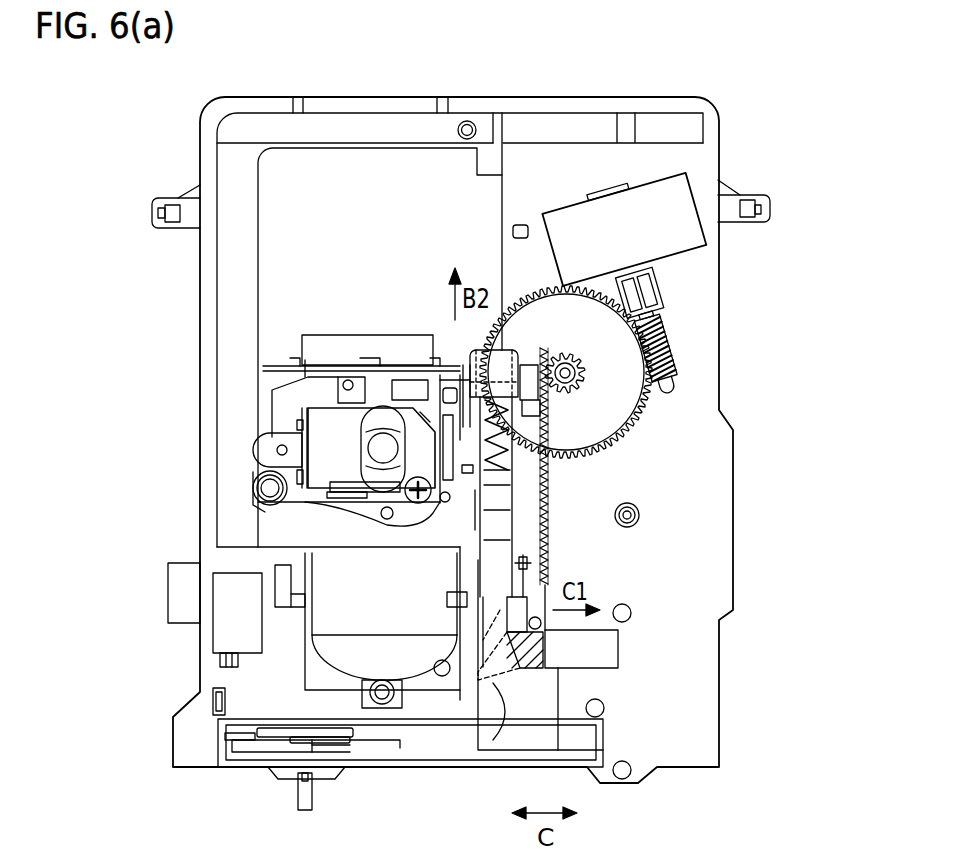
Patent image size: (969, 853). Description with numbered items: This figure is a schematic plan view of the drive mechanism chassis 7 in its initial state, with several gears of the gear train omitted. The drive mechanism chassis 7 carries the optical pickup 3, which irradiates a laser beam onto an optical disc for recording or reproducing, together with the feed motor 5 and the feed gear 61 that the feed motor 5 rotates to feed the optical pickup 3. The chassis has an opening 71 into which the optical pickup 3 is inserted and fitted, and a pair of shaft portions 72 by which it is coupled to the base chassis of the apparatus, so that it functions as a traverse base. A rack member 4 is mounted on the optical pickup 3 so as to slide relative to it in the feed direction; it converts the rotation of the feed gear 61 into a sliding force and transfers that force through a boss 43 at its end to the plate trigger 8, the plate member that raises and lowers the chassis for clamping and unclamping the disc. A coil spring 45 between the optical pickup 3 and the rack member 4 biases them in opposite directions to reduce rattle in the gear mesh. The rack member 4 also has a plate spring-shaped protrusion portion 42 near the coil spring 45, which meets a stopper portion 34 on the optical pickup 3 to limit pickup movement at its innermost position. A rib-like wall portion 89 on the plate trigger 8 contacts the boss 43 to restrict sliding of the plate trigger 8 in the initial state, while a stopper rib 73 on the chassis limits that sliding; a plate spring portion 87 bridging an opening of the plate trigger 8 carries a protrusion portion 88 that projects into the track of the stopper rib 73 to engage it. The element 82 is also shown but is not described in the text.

The drive mechanism chassis 7 is at (701, 97).
The opening 71 is at (375, 177).
The shaft portions 72 is at (187, 224).
The feed motor 5 is at (568, 218).
The optical pickup 3 is at (385, 375).
The protrusion portion 42 is at (470, 383).
The rack member 4 is at (530, 490).
The coil spring 45 is at (508, 446).
The feed gear 61 is at (626, 412).
The stopper portion 34 is at (475, 507).
The rib-like wall portion 89 is at (494, 632).
The boss 43 is at (540, 622).
The plate trigger 8 is at (378, 750).
The plate spring portion 87 is at (298, 733).
The protrusion portion 88 is at (250, 736).
The pin 82 is at (298, 790).
The stopper rib 73 is at (330, 738).